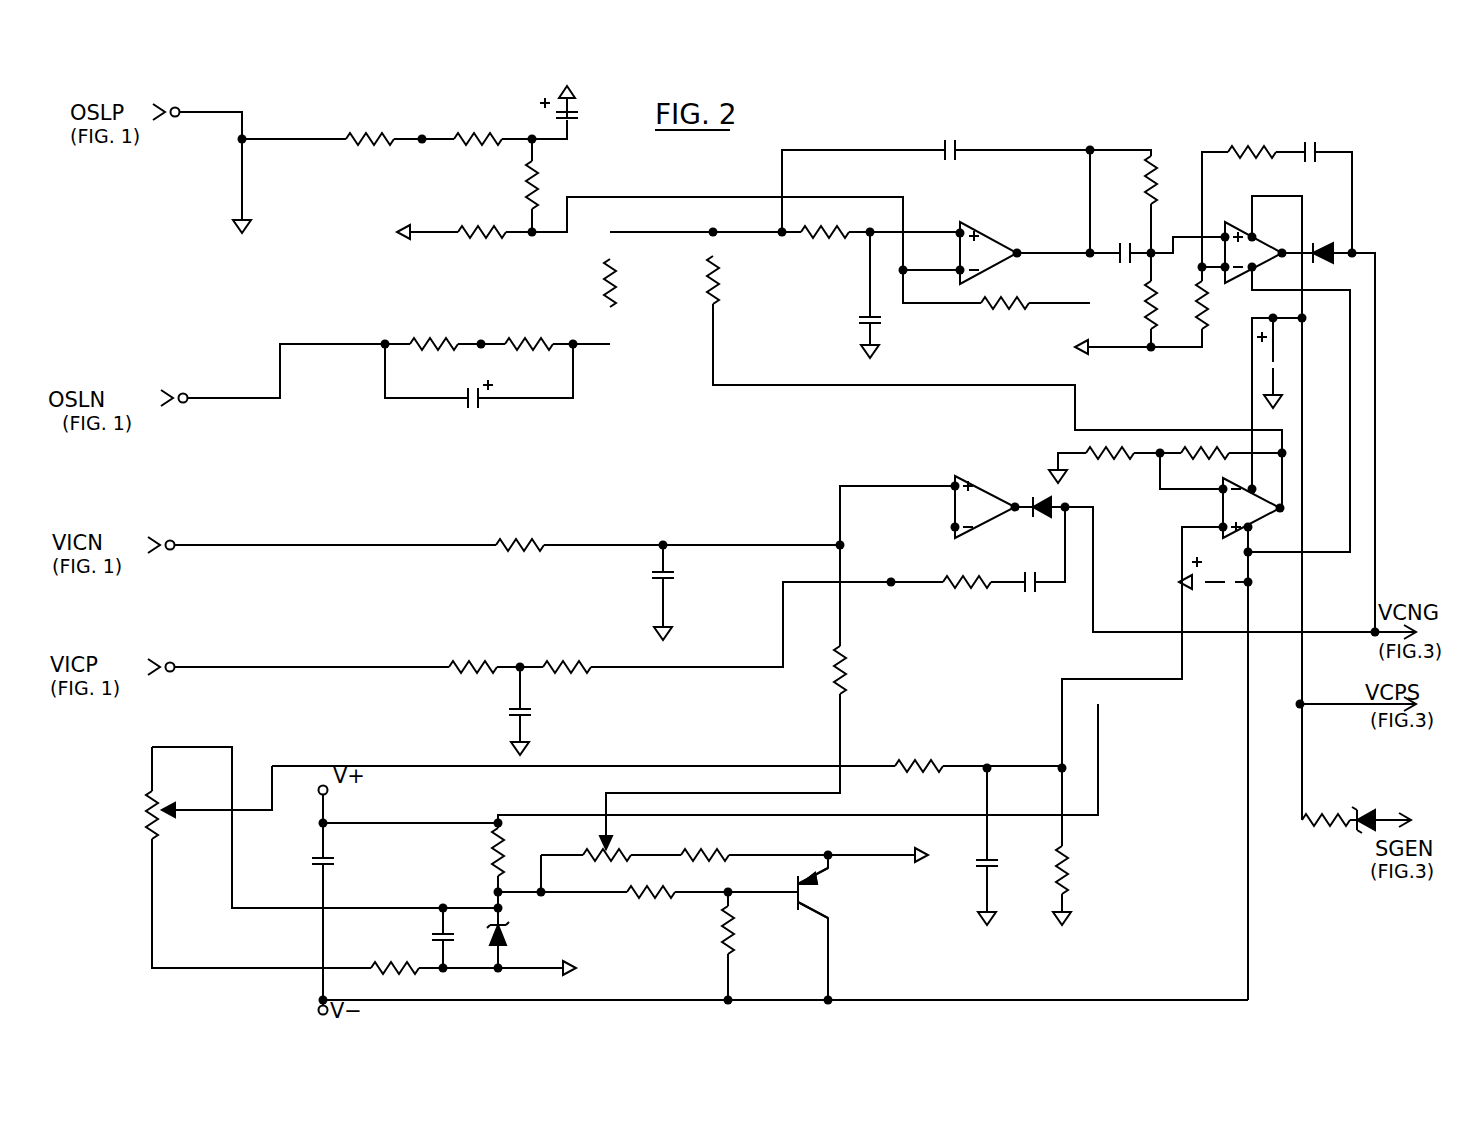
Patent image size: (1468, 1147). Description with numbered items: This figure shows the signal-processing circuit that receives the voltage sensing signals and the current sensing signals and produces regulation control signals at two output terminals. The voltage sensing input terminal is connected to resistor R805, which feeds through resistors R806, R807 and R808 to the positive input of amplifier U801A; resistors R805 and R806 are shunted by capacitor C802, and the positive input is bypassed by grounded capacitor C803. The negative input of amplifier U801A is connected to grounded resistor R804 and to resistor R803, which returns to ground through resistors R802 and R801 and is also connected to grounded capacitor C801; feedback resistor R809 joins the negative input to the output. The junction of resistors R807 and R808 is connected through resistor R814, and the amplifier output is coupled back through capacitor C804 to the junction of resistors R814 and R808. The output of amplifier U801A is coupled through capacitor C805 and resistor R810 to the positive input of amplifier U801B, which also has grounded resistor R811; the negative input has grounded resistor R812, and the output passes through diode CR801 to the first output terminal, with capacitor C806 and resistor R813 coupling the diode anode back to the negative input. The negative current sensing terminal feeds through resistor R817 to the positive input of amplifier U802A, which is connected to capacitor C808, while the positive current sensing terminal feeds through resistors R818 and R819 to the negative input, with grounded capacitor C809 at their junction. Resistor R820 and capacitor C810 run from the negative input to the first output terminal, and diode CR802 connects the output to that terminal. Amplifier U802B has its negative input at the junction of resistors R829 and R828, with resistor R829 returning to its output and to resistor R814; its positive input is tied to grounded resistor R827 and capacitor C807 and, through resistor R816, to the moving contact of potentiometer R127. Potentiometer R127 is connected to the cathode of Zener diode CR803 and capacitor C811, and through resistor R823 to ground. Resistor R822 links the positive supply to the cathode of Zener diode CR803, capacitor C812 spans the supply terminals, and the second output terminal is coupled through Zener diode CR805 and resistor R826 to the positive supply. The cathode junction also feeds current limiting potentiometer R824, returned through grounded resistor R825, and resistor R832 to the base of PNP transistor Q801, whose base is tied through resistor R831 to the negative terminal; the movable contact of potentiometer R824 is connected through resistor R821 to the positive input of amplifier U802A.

The resistor R801 is at (384, 132).
The resistor R802 is at (466, 132).
The resistor R803 is at (540, 182).
The grounded resistor R804 is at (496, 223).
The resistor R805 is at (422, 338).
The resistor R806 is at (519, 340).
The resistor R807 is at (604, 287).
The resistor R808 is at (806, 229).
The resistor R809 is at (1014, 308).
The resistor R810 is at (1188, 132).
The grounded resistor R811 is at (1146, 310).
The grounded resistor R812 is at (1208, 322).
The resistor R813 is at (1255, 146).
The resistor R814 is at (708, 286).
The resistor R816 is at (920, 762).
The resistor R817 is at (520, 532).
The resistor R818 is at (464, 661).
The second resistor R819 is at (572, 664).
The resistor R820 is at (982, 586).
The resistor R821 is at (848, 672).
The resistor R822 is at (490, 866).
The resistor R823 is at (384, 972).
The current limiting potentiometer R824 is at (592, 846).
The grounded resistor R825 is at (698, 854).
The resistor R826 is at (1328, 834).
The grounded resistor R827 is at (1068, 881).
The resistor R828 is at (1094, 456).
The resistor R829 is at (1228, 414).
The resistor R831 is at (734, 926).
The resistor R832 is at (636, 894).
The potentiometer R127 is at (142, 820).
The grounded capacitor C801 is at (594, 120).
The capacitor C802 is at (486, 416).
The grounded capacitor C803 is at (858, 316).
The capacitor C804 is at (951, 138).
The capacitor C805 is at (1138, 244).
The capacitor C806 is at (1308, 136).
The grounded capacitor C807 is at (974, 868).
The capacitor C808 is at (678, 578).
The grounded capacitor C809 is at (536, 714).
The capacitor C810 is at (1022, 590).
The capacitor C811 is at (430, 942).
The capacitor C812 is at (332, 866).
The amplifier U801A is at (990, 234).
The further amplifier U801B is at (1236, 232).
The amplifier U802A is at (1012, 442).
The second amplifier U802B is at (1224, 510).
The diode CR801 is at (1324, 248).
The diode CR802 is at (1040, 514).
The Zener diode CR803 is at (514, 936).
The Zener diode CR805 is at (1378, 790).
The PNP transistor Q801 is at (816, 896).